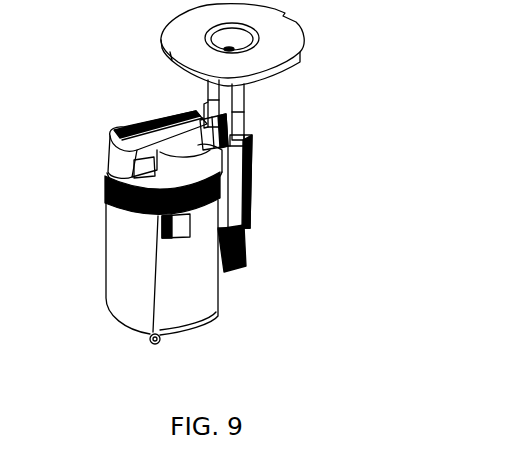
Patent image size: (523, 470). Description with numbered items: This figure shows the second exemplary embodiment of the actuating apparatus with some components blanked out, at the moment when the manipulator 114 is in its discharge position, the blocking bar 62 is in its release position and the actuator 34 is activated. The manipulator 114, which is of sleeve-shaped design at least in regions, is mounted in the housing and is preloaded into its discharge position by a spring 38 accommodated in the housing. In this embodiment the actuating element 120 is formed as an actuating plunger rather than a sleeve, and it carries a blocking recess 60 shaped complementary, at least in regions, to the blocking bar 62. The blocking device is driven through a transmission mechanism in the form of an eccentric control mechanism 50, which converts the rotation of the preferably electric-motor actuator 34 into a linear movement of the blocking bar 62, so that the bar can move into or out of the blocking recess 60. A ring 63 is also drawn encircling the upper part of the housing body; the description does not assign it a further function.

The actuator 34 is at (107, 293).
The spring 38 is at (240, 244).
The eccentric control mechanism 50 is at (183, 177).
The blocking recess 60 is at (203, 116).
The blocking bar 62 is at (107, 147).
The ring 63 is at (110, 184).
The manipulator 114 is at (240, 190).
The actuating element 120 is at (246, 129).